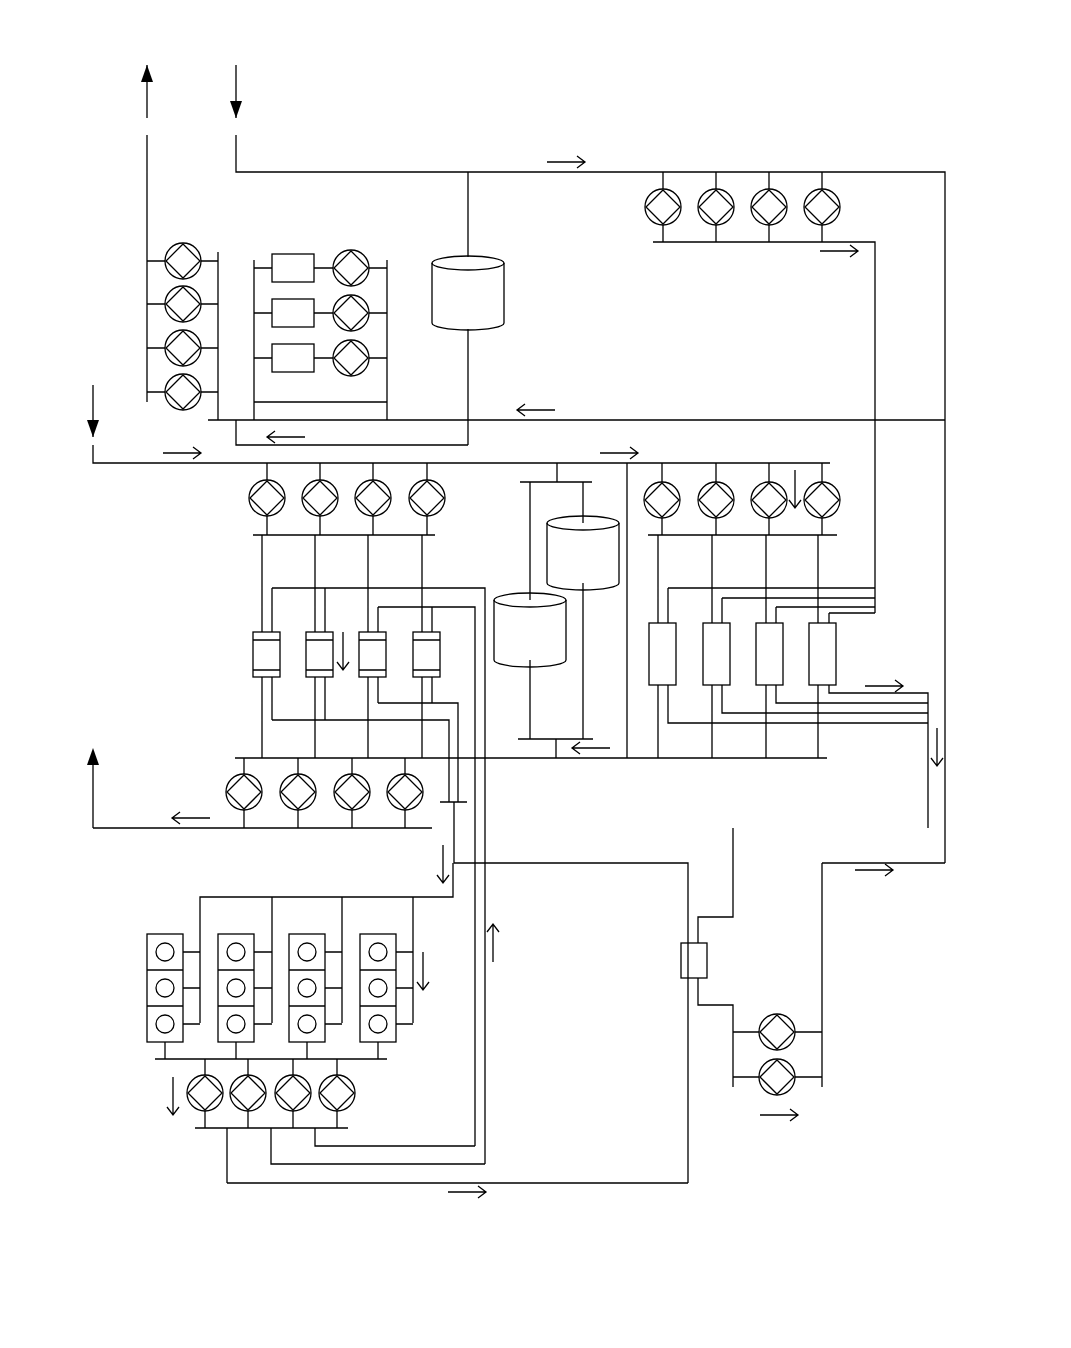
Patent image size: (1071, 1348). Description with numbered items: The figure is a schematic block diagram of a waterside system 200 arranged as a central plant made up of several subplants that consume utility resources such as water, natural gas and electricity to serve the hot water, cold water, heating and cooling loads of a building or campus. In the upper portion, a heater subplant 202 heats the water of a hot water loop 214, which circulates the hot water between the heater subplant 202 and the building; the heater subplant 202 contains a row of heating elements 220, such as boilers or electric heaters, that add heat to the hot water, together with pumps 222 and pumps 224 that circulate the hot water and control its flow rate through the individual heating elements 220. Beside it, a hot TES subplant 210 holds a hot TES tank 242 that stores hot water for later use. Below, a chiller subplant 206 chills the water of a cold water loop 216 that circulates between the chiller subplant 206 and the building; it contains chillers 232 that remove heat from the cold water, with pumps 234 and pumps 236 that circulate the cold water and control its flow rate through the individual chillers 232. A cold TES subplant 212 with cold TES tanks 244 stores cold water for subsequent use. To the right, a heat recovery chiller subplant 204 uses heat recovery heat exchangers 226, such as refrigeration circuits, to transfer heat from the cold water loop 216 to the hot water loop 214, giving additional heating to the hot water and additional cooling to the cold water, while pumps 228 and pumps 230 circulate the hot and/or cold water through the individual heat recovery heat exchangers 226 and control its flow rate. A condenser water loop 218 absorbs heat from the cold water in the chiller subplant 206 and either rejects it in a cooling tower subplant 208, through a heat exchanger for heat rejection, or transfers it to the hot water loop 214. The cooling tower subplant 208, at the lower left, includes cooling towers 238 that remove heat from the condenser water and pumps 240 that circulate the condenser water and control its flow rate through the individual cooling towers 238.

The waterside system 200 is at (830, 42).
The heater subplant 202 is at (416, 155).
The heat recovery chiller subplant 204 is at (865, 748).
The chiller subplant 206 is at (198, 576).
The cooling tower subplant 208 is at (118, 979).
The hot thermal energy storage subplant 210 is at (528, 312).
The cold thermal energy storage subplant 212 is at (498, 542).
The hot water loop 214 is at (147, 178).
The cold water loop 216 is at (147, 467).
The condenser water loop 218 is at (688, 1183).
The heating elements 220 is at (278, 254).
The pumps 222 is at (195, 243).
The pumps 224 is at (358, 252).
The heat recovery heat exchangers 226 is at (838, 652).
The pumps 228 is at (836, 482).
The pumps 230 is at (840, 205).
The chillers 232 is at (252, 648).
The pumps 234 is at (228, 786).
The pumps 236 is at (250, 498).
The cooling towers 238 is at (398, 1033).
The pumps 240 is at (355, 1100).
The hot TES tank 242 is at (497, 278).
The cold TES tanks 244 is at (567, 522).